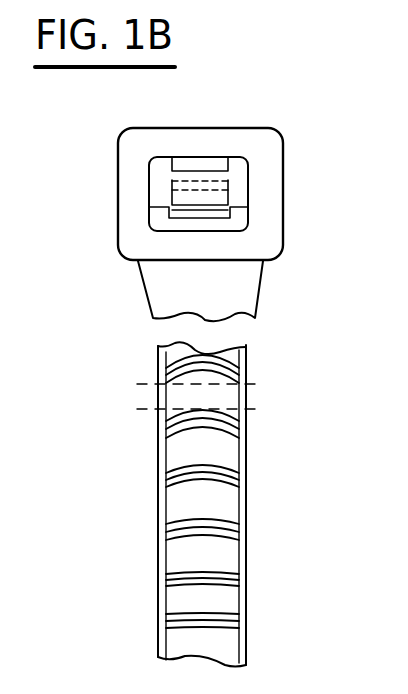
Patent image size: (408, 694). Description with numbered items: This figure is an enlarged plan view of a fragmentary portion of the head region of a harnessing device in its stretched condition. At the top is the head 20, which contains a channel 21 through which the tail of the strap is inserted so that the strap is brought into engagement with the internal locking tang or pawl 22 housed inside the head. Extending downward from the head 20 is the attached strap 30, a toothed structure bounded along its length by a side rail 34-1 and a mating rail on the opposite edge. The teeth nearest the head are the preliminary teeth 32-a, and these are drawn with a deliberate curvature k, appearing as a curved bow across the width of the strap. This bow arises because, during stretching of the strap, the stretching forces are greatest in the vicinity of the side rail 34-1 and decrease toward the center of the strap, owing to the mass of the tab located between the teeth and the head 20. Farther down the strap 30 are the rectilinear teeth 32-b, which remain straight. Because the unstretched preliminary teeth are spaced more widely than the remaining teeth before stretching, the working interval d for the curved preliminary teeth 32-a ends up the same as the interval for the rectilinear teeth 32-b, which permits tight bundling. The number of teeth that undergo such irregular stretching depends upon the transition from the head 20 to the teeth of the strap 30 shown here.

The head 20 is at (262, 162).
The channel 21 is at (240, 197).
The internal locking tang or pawl 22 is at (182, 195).
The strap 30 is at (238, 298).
The side rail 34-1 is at (245, 519).
The preliminary teeth 32-a is at (208, 470).
The rectilinear teeth 32-b is at (212, 580).
The curvature k is at (205, 355).
The working interval d is at (202, 393).